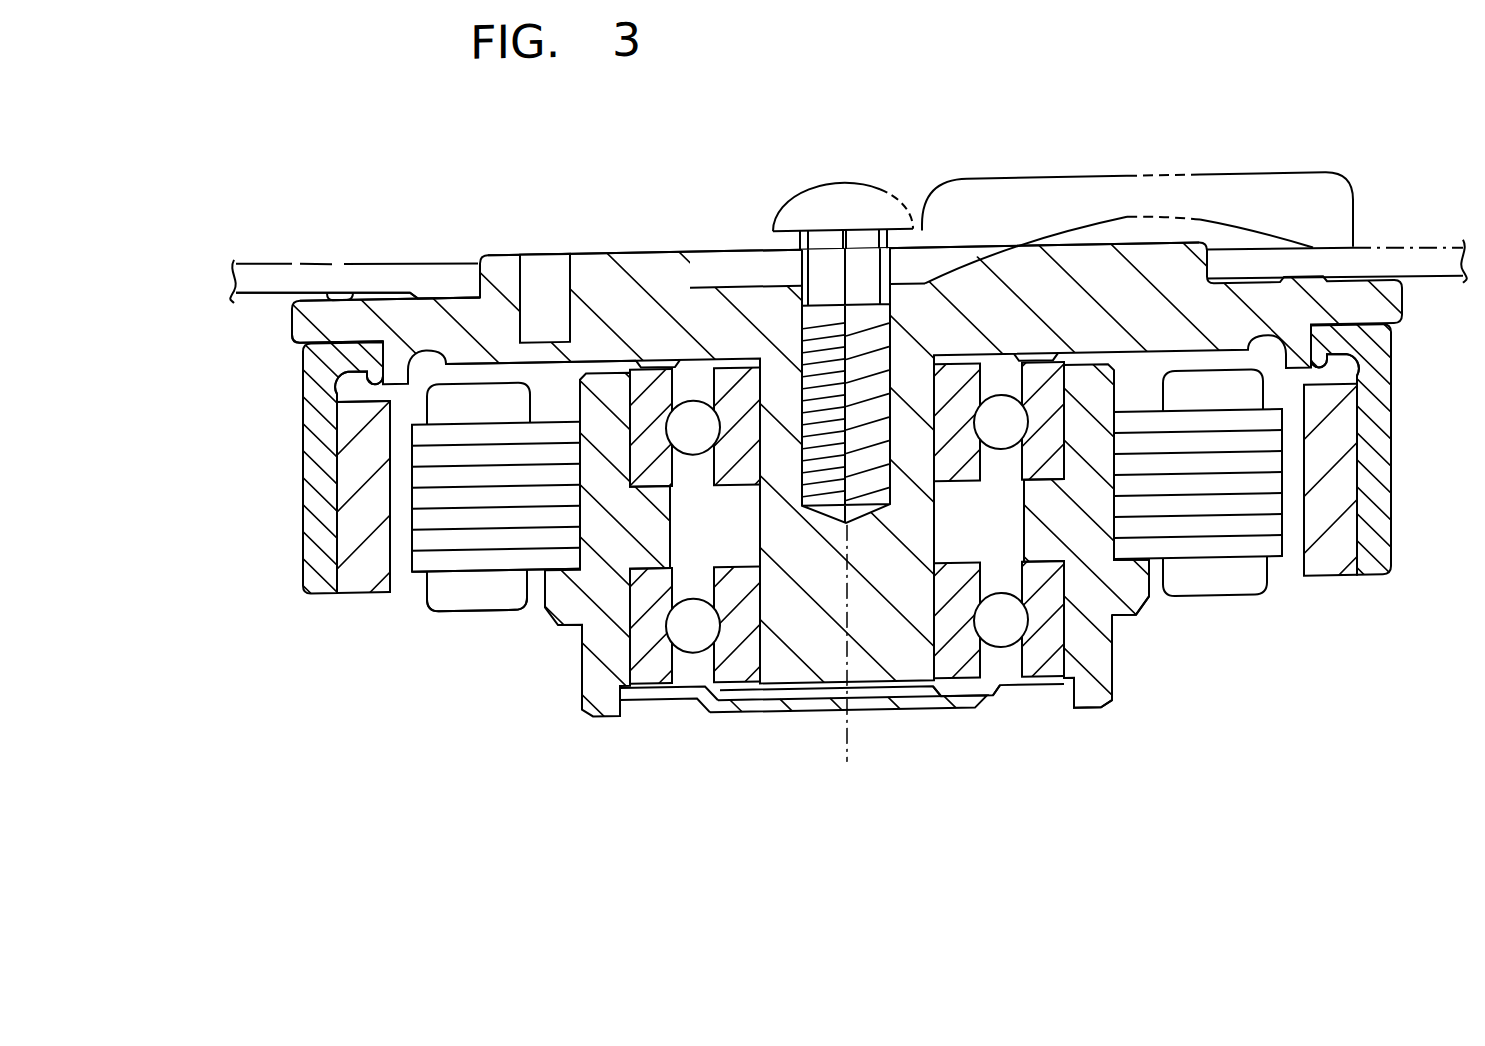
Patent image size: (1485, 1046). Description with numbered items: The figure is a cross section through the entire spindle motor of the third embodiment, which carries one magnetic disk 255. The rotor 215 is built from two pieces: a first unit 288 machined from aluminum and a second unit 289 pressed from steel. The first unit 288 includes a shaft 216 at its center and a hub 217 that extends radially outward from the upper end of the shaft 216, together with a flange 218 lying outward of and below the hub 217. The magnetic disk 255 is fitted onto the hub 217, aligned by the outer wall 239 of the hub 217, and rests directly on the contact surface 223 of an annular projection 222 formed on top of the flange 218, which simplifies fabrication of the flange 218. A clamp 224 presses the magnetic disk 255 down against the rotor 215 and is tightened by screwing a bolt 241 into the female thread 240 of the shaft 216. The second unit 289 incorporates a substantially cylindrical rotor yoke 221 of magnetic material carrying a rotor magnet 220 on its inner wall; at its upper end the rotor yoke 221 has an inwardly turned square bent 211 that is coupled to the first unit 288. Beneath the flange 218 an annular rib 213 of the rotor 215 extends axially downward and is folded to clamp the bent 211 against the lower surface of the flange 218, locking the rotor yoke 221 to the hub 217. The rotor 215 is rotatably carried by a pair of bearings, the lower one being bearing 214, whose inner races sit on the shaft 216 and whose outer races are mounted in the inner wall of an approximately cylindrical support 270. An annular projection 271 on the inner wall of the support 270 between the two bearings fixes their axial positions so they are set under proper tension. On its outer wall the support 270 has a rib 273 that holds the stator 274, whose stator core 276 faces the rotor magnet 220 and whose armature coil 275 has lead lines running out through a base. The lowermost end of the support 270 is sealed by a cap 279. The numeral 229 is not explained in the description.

The magnetic disk 255 is at (826, 206).
The flange 218 is at (326, 197).
The annular projection 222 is at (386, 236).
The contact surface 223 is at (358, 243).
The outer wall 239 is at (490, 265).
The rotor 215 is at (742, 413).
The hub 217 is at (843, 179).
The hub underside 229 is at (541, 268).
The annular rib 213 is at (604, 327).
The bolt 241 is at (843, 137).
The female thread 240 is at (868, 312).
The first unit 288 is at (1119, 191).
The clamp 224 is at (1137, 158).
The second unit 289 is at (771, 458).
The bent 211 is at (754, 395).
The rotor yoke 221 is at (248, 502).
The rotor magnet 220 is at (810, 554).
The stator 274 is at (470, 649).
The armature coil 275 is at (847, 548).
The stator core 276 is at (847, 553).
The support 270 is at (842, 587).
The cap 279 is at (810, 750).
The shaft 216 is at (842, 721).
The bearing 214 is at (963, 739).
The annular projection 271 is at (1078, 730).
The rib 273 is at (1150, 609).